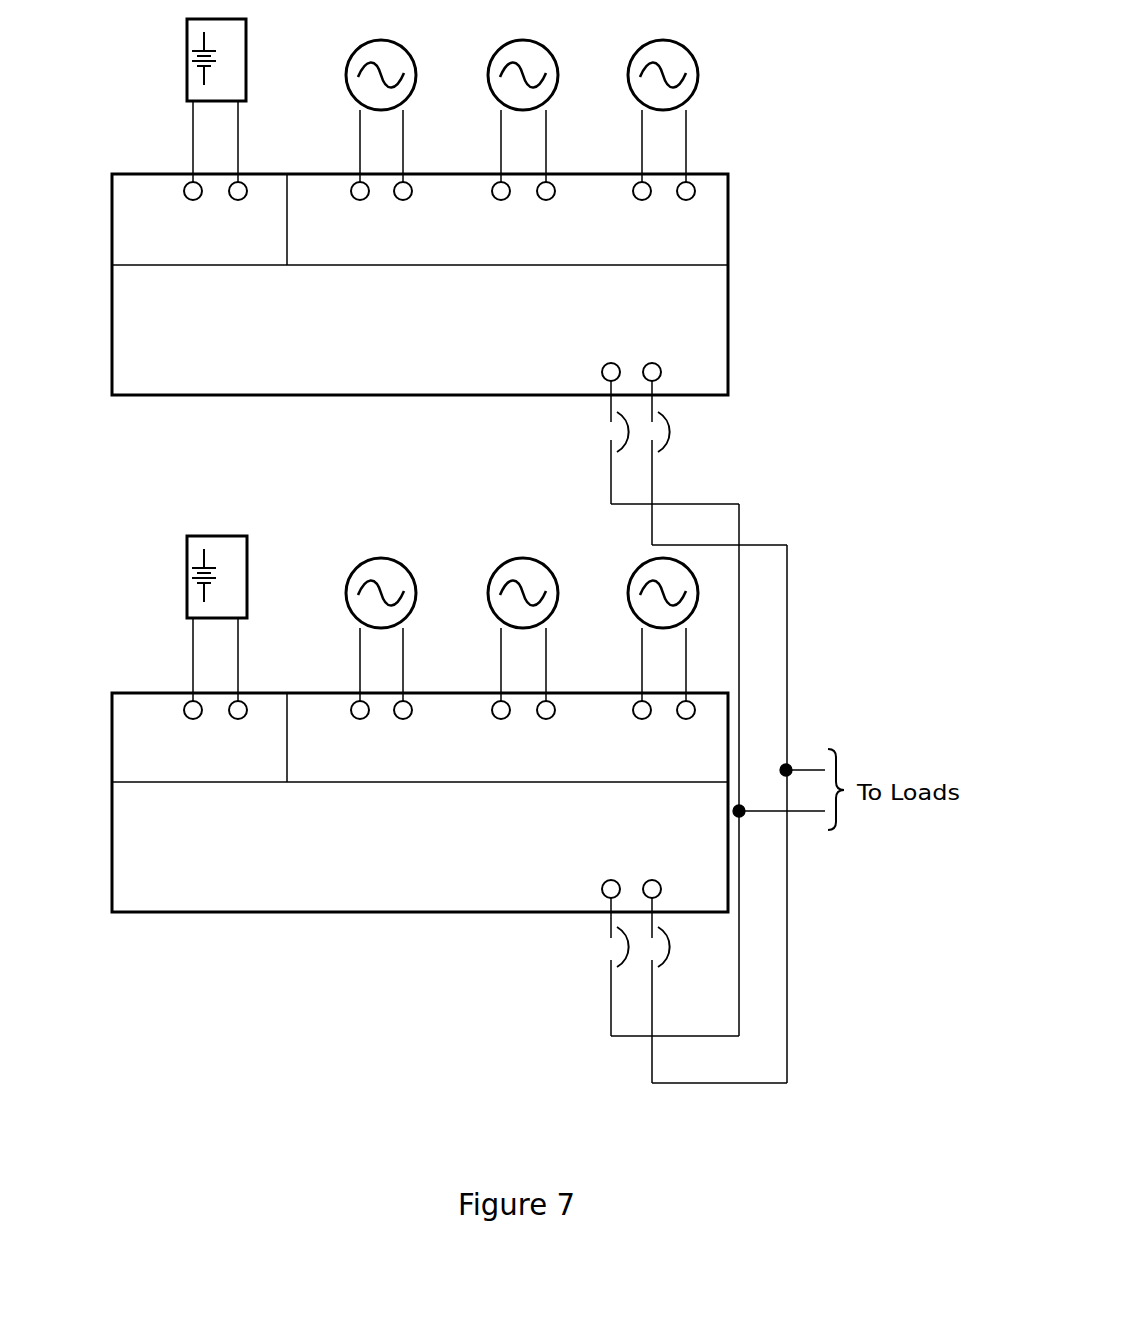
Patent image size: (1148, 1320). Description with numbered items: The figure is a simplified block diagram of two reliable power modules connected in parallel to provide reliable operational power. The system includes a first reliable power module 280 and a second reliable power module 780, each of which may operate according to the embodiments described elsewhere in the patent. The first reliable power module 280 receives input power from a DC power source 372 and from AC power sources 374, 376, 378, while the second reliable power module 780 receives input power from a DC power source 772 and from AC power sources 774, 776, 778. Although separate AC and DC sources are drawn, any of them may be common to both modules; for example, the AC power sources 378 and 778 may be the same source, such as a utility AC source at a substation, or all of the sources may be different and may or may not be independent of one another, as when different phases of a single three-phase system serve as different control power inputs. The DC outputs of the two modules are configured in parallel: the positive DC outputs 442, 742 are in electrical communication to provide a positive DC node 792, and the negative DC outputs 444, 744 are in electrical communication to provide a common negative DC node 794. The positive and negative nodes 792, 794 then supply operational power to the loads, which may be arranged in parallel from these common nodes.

The first reliable power module 280 is at (111, 222).
The DC power source 372 is at (187, 42).
The AC power source 374 is at (349, 62).
The AC power source 376 is at (490, 58).
The AC power source 378 is at (630, 58).
The positive DC output 442 is at (603, 364).
The negative DC output 444 is at (655, 364).
The second reliable power module 780 is at (111, 738).
The DC power source 772 is at (187, 561).
The AC power source 774 is at (349, 580).
The AC power source 776 is at (490, 576).
The AC power source 778 is at (630, 576).
The positive DC output 742 is at (603, 881).
The negative DC output 744 is at (656, 881).
The positive DC node 792 is at (742, 814).
The common negative DC node 794 is at (789, 767).